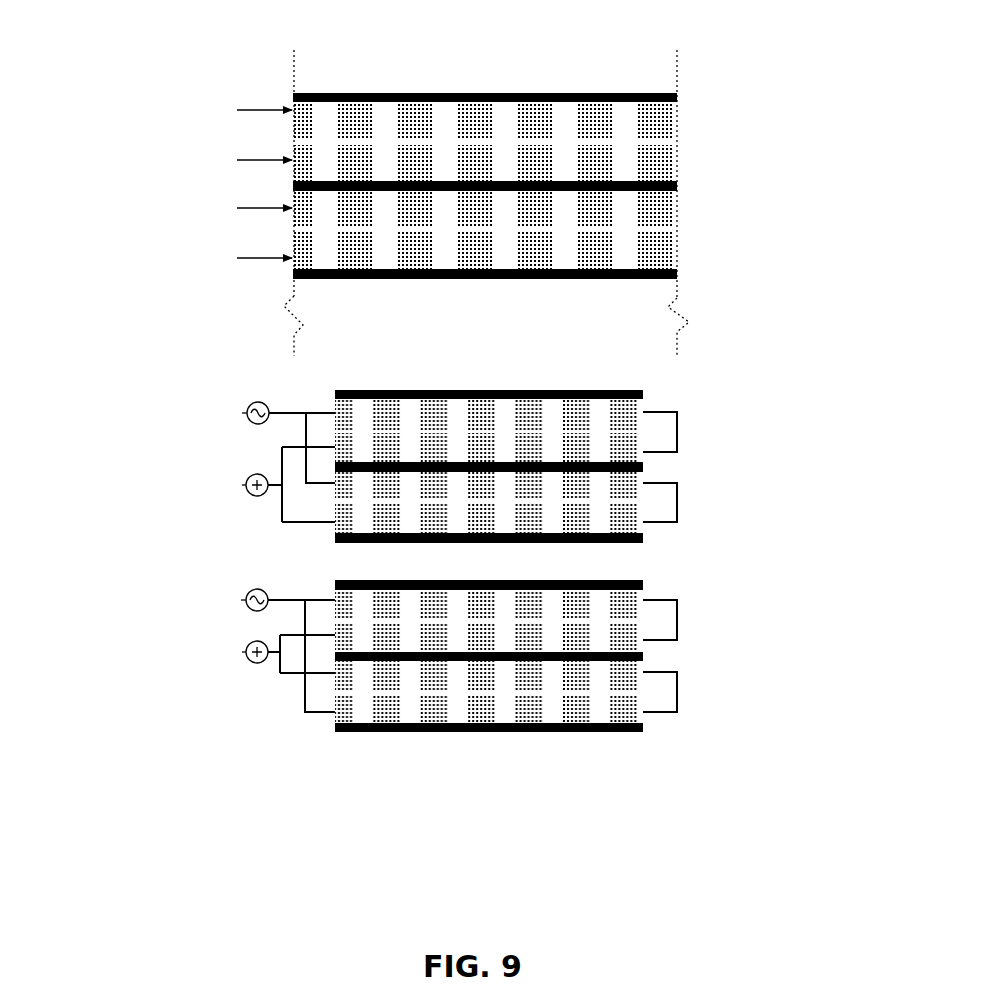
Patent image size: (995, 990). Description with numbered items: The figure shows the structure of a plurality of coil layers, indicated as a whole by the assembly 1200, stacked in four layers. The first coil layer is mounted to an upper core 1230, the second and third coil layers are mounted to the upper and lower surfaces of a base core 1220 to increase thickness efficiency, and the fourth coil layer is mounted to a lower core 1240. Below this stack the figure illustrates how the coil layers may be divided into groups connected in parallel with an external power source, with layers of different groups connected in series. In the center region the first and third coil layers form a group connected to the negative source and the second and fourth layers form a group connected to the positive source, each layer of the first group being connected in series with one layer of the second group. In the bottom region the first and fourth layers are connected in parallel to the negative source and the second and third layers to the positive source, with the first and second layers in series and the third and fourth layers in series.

The coil assembly 1200 is at (714, 124).
The base core 1220 is at (677, 187).
The upper core 1230 is at (612, 93).
The lower core 1240 is at (585, 280).